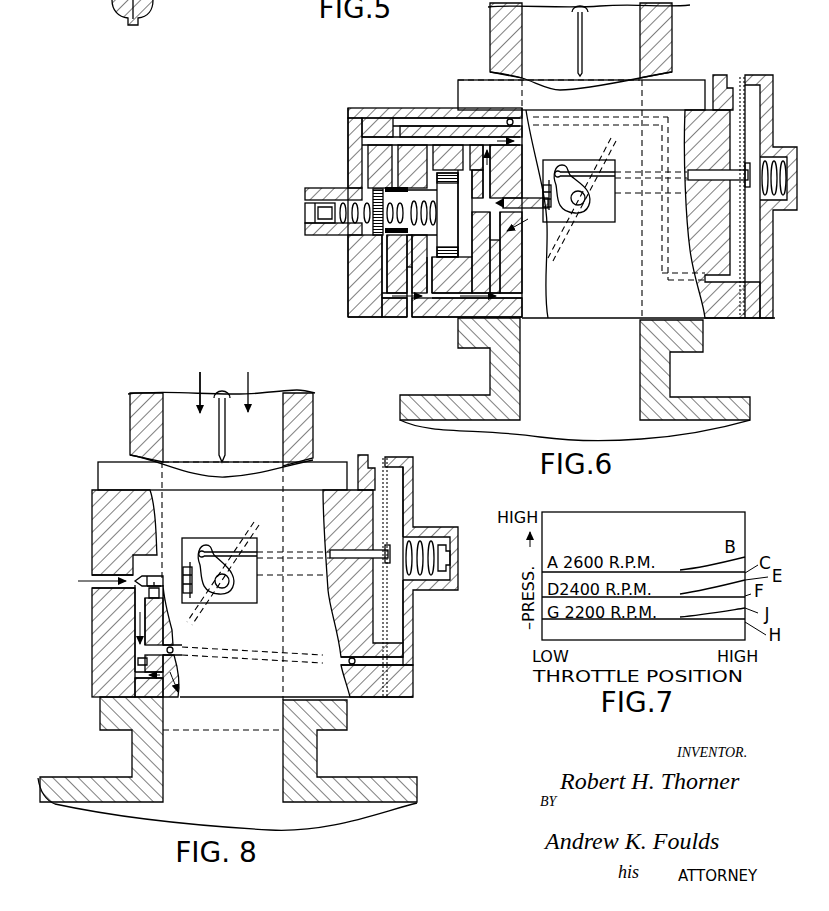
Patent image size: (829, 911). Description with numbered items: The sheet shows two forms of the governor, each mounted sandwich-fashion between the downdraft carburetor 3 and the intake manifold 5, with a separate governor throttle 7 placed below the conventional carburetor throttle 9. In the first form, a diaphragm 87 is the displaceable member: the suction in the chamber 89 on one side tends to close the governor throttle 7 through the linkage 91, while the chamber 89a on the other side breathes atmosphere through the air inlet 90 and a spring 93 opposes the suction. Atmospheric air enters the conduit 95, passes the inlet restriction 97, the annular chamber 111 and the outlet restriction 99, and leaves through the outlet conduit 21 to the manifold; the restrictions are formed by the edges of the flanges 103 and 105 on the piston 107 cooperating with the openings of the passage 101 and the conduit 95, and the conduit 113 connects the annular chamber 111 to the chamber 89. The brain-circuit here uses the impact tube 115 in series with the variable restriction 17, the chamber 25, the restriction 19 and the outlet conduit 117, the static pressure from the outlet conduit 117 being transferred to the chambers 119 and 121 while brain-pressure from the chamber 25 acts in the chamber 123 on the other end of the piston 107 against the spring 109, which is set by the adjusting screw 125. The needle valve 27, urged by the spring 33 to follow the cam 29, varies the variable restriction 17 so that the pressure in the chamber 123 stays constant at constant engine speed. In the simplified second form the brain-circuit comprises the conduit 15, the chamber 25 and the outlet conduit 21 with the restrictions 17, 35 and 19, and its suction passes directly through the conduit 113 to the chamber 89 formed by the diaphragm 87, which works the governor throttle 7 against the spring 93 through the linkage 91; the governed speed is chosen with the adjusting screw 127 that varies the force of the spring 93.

In FIG. 6, the downdraft carburetor 3 is at (672, 20).
In FIG. 8, the downdraft carburetor 3 is at (318, 405).
In FIG. 6, the intake manifold 5 is at (656, 380).
In FIG. 8, the intake manifold 5 is at (307, 758).
In FIG. 6, the governor throttle 7 is at (570, 243).
In FIG. 8, the governor throttle 7 is at (203, 628).
In FIG. 6, the carburetor throttle 9 is at (585, 55).
In FIG. 8, the carburetor throttle 9 is at (228, 457).
In FIG. 8, the conduit 15 is at (93, 581).
In FIG. 6, the variable restriction 17 is at (524, 240).
In FIG. 8, the variable restriction 17 is at (149, 565).
In FIG. 6, the restriction 19 is at (482, 163).
In FIG. 8, the restriction 19 is at (138, 660).
In FIG. 6, the outlet conduit 21 is at (462, 320).
In FIG. 8, the outlet conduit 21 is at (152, 680).
In FIG. 6, the chamber 25 is at (495, 237).
In FIG. 8, the chamber 25 is at (138, 619).
In FIG. 6, the needle valve 27 is at (522, 193).
In FIG. 8, the needle valve 27 is at (124, 532).
In FIG. 6, the cam 29 is at (573, 185).
In FIG. 8, the cam 29 is at (227, 598).
In FIG. 6, the spring 33 is at (549, 183).
In FIG. 8, the spring 33 is at (190, 565).
In FIG. 8, the calibrated orifice 35 is at (148, 602).
In FIG. 6, the diaphragm 87 is at (749, 108).
In FIG. 8, the diaphragm 87 is at (389, 612).
In FIG. 6, the chamber 89 is at (758, 245).
In FIG. 8, the chamber 89 is at (398, 487).
In FIG. 6, the chamber 89a is at (733, 100).
In FIG. 8, the chamber 89a is at (372, 482).
In FIG. 6, the air inlet 90 is at (738, 76).
In FIG. 8, the air inlet 90 is at (379, 462).
In FIG. 6, the linkage 91 is at (706, 170).
In FIG. 8, the linkage 91 is at (348, 548).
In FIG. 6, the spring 93 is at (772, 158).
In FIG. 8, the spring 93 is at (421, 535).
In FIG. 6, the conduit 95 is at (408, 320).
In FIG. 6, the inlet restriction 97 is at (386, 279).
In FIG. 6, the outlet restriction 99 is at (365, 276).
In FIG. 6, the passage 101 is at (385, 292).
In FIG. 6, the flange 103 is at (358, 203).
In FIG. 6, the flange 105 is at (404, 203).
In FIG. 6, the piston 107 is at (467, 262).
In FIG. 6, the spring 109 is at (345, 195).
In FIG. 6, the annular chamber 111 is at (378, 192).
In FIG. 6, the conduit 113 is at (437, 117).
In FIG. 8, the conduit 113 is at (371, 667).
In FIG. 6, the impact tube 115 is at (549, 256).
In FIG. 6, the outlet conduit 117 is at (491, 136).
In FIG. 6, the chamber 119 is at (364, 237).
In FIG. 6, the chamber 121 is at (437, 242).
In FIG. 6, the chamber 123 is at (465, 256).
In FIG. 6, the adjusting screw 125 is at (322, 216).
In FIG. 8, the adjusting screw 127 is at (451, 559).